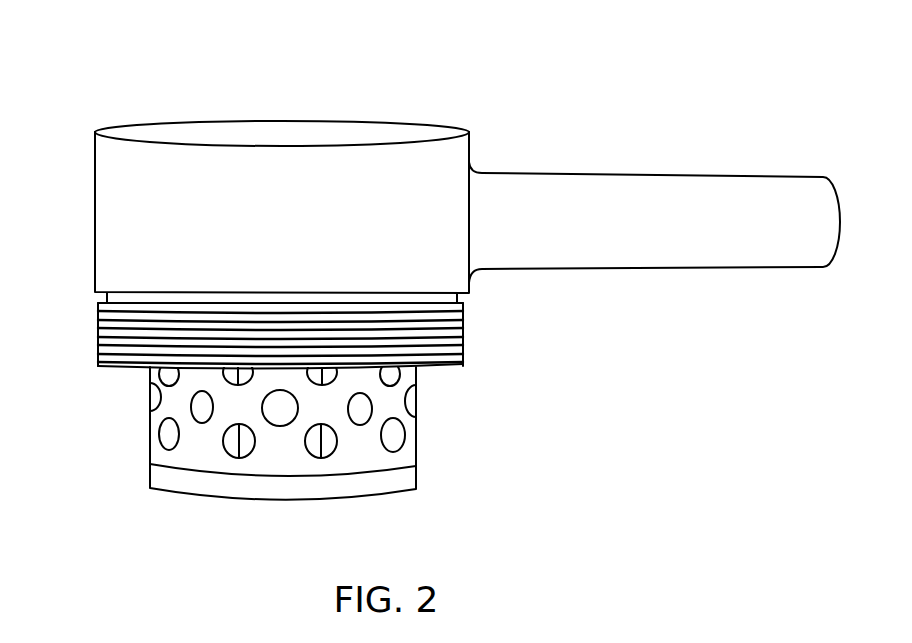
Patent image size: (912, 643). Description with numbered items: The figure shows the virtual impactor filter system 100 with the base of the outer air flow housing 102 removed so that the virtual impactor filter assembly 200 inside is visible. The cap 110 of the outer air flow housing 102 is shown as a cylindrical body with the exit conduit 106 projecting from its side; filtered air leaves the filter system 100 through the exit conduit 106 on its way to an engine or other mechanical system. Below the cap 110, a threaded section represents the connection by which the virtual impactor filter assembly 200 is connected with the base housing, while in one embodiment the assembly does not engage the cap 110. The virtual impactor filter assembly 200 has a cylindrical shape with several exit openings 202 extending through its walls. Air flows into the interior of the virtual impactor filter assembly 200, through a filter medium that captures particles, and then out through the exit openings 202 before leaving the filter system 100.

The virtual impactor filter system 100 is at (473, 85).
The outer air flow housing 102 is at (88, 376).
The exit conduit 106 is at (723, 190).
The cap 110 is at (297, 170).
The virtual impactor filter assembly 200 is at (405, 455).
The exit openings 202 is at (240, 442).